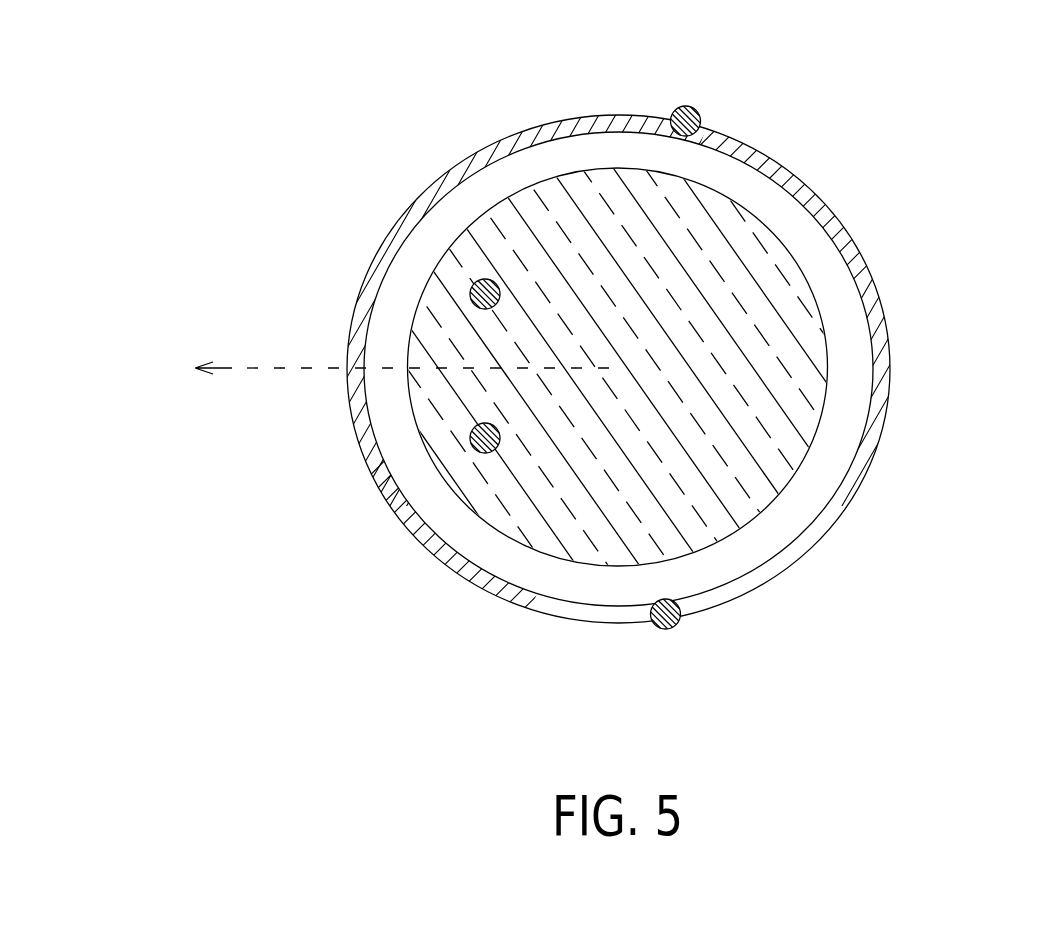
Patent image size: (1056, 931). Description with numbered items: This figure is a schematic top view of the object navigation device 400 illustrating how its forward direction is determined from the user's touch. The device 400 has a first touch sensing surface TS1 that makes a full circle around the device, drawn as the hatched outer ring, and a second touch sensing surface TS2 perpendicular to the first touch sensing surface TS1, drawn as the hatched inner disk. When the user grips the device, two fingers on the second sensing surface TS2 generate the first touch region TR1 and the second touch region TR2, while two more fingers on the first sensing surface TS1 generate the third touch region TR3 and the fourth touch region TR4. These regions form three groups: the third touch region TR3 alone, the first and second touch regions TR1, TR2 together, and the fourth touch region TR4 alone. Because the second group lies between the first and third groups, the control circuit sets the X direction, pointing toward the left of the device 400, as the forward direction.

The object navigation device 400 is at (618, 397).
The first touch sensing surface TS1 is at (722, 136).
The second touch sensing surface TS2 is at (458, 477).
The first touch region TR1 is at (470, 297).
The second touch region TR2 is at (470, 438).
The third touch region TR3 is at (682, 106).
The fourth touch region TR4 is at (670, 629).
The X direction X is at (406, 352).